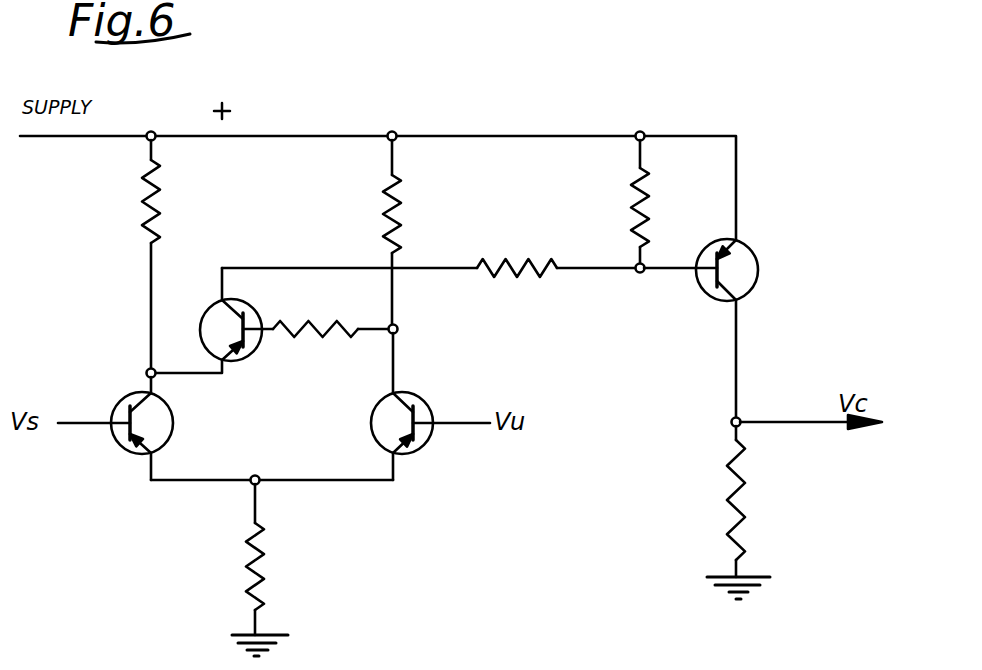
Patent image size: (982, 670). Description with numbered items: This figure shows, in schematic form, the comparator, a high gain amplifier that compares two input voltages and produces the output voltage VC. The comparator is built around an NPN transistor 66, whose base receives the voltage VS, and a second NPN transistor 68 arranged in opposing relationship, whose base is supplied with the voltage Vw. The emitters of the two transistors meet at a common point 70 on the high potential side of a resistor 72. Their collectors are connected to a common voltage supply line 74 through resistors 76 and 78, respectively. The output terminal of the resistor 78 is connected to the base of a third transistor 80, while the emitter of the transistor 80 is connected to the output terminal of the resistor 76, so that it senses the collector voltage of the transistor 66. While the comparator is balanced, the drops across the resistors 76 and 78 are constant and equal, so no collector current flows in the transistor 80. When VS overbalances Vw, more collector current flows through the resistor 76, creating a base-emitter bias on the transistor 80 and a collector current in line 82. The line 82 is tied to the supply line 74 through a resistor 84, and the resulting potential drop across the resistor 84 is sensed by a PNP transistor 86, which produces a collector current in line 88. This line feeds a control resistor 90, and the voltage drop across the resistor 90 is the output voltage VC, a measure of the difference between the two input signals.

The NPN transistor 66 is at (175, 434).
The second NPN transistor 68 is at (375, 444).
The common point 70 is at (299, 482).
The resistor 72 is at (264, 560).
The common voltage supply line 74 is at (330, 134).
The resistor 76 is at (146, 180).
The resistor 78 is at (383, 183).
The third transistor 80 is at (259, 349).
The line 82 is at (334, 266).
The resistor 84 is at (630, 176).
The PNP transistor 86 is at (756, 247).
The line 88 is at (739, 348).
The control resistor 90 is at (744, 544).